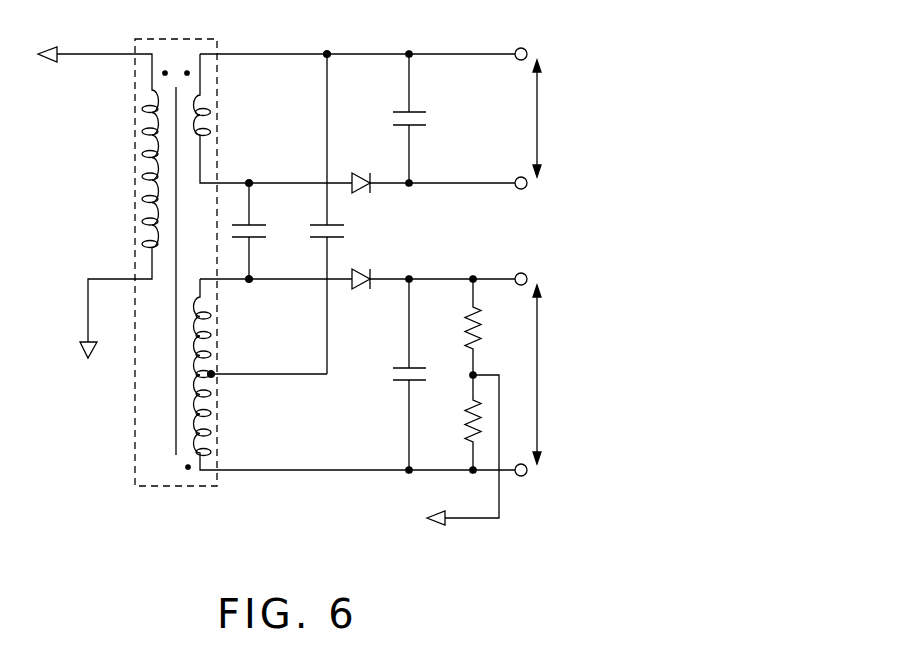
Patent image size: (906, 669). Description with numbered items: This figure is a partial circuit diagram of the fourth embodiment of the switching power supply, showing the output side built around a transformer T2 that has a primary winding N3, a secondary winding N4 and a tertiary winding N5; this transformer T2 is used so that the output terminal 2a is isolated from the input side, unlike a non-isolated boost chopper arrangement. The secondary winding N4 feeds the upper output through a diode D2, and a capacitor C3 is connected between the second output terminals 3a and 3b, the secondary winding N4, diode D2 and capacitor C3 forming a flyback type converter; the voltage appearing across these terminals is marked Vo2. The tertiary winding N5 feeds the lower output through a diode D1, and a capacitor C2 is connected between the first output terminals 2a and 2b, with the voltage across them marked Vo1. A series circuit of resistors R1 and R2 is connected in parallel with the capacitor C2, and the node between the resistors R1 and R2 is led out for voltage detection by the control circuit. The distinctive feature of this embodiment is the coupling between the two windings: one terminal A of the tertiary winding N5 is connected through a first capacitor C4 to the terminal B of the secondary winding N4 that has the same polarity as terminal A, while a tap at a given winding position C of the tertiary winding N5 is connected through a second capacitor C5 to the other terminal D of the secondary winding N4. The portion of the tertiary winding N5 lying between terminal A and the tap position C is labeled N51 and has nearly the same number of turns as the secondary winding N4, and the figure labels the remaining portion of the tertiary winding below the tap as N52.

The transformer T2 is at (165, 38).
The primary winding N3 is at (98, 202).
The secondary winding N4 is at (232, 118).
The tertiary winding N5 is at (302, 374).
The winding area N51 is at (276, 323).
The winding portion of N5 N52 is at (267, 399).
The capacitor C2 is at (396, 374).
The capacitor C3 is at (427, 118).
The first capacitor C4 is at (264, 231).
The second capacitor C5 is at (347, 214).
The diode D1 is at (380, 304).
The diode D2 is at (380, 164).
The resistor R1 is at (453, 328).
The resistor R2 is at (460, 450).
The first output terminal 2a is at (526, 274).
The first output terminal 2b is at (525, 476).
The second output terminal 3a is at (526, 49).
The second output terminal 3b is at (526, 188).
The first output voltage Vo1 is at (561, 374).
The second output voltage Vo2 is at (561, 118).
The terminal of tertiary winding A is at (255, 274).
The terminal of secondary winding B is at (255, 178).
The winding position C is at (216, 382).
The other terminal of secondary winding D is at (333, 49).